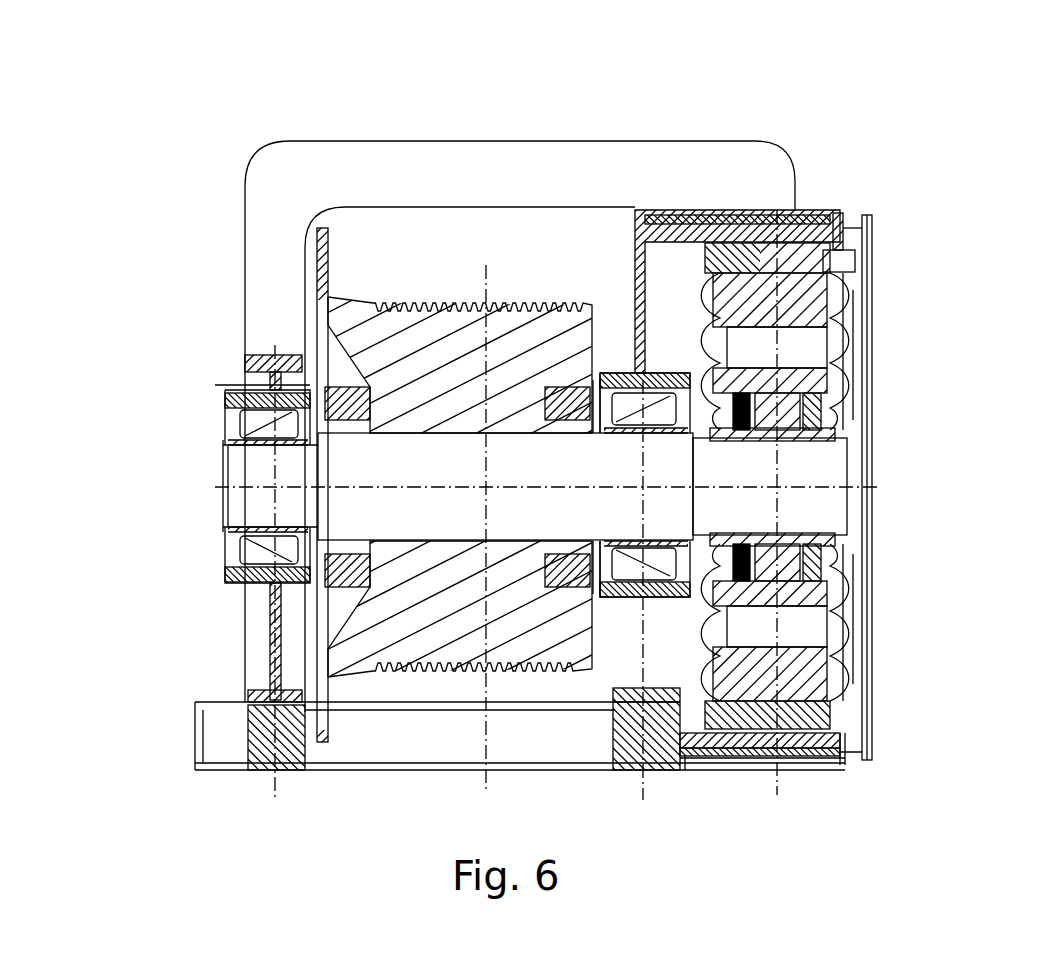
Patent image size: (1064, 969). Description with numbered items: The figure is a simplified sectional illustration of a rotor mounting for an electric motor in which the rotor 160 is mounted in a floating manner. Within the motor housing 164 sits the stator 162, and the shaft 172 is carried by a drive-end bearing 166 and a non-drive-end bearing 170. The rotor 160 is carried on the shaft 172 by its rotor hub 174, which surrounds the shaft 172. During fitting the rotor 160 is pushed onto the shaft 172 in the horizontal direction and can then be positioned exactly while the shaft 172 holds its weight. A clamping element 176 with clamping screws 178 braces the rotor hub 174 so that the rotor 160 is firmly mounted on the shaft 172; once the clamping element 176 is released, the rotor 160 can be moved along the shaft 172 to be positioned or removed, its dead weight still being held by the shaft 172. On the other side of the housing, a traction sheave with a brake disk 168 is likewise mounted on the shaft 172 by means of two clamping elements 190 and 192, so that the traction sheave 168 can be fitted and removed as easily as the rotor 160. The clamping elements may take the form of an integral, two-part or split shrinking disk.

The rotor 160 is at (855, 272).
The stator 162 is at (838, 245).
The motor housing 164 is at (838, 212).
The drive-end bearing 166 is at (616, 382).
The traction sheave with a brake disk 168 is at (345, 305).
The non-drive-end bearing 170 is at (232, 393).
The shaft 172 is at (840, 462).
The rotor hub 174 is at (833, 535).
The clamping element 176 is at (830, 393).
The clamping screws 178 is at (790, 440).
The clamping element 190 is at (363, 387).
The clamping element 192 is at (553, 387).